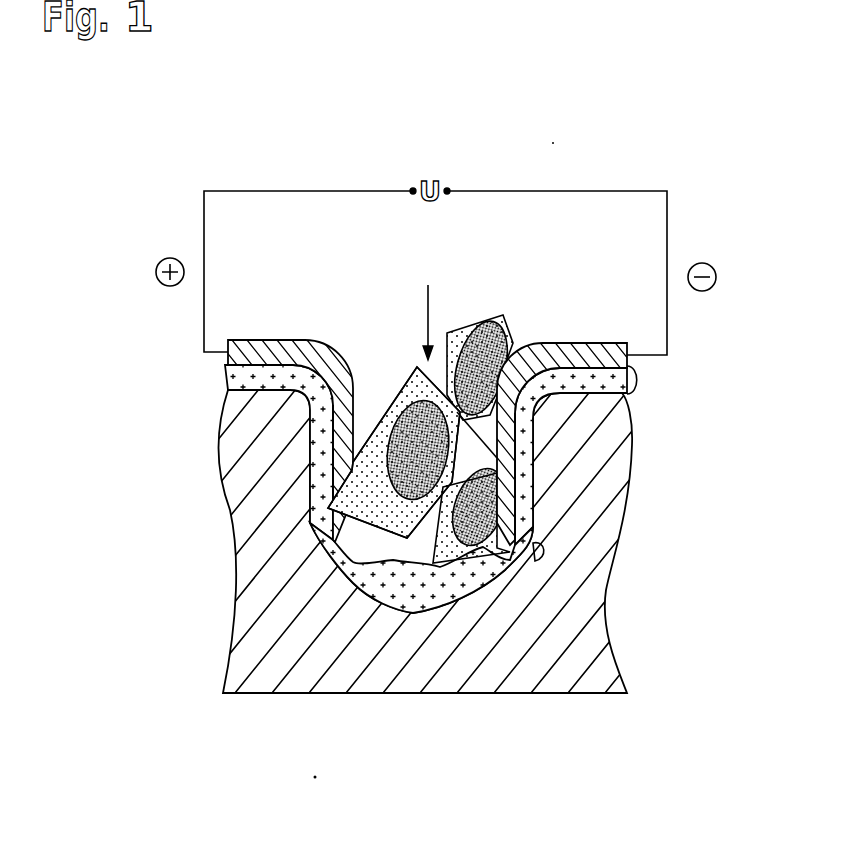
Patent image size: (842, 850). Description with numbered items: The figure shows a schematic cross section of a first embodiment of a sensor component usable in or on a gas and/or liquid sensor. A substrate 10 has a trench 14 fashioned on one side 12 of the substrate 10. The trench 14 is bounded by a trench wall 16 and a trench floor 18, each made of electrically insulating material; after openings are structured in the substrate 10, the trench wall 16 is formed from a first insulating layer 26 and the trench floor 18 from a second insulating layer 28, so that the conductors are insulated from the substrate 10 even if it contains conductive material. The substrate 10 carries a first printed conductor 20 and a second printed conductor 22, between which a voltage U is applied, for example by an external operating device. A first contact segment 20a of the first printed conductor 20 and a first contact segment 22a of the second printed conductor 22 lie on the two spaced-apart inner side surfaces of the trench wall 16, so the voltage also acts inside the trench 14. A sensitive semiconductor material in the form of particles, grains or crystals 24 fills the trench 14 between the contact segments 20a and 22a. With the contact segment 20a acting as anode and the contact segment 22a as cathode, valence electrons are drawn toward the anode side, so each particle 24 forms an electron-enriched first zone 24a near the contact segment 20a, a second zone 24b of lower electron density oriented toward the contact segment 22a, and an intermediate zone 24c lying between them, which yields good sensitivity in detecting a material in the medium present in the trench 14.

The substrate 10 is at (523, 645).
The side of the substrate 12 is at (627, 398).
The trench 14 is at (427, 328).
The trench wall 16 is at (318, 417).
The trench floor 18 is at (413, 600).
The first printed conductor 20 is at (272, 340).
The first contact segment of the first printed conductor 20a is at (350, 470).
The second printed conductor 22 is at (587, 343).
The first contact segment of the second printed conductor 22a is at (512, 525).
The particle, grain, and/or crystal 24 is at (378, 372).
The first zone 24a is at (462, 345).
The second zone 24b is at (523, 345).
The intermediate zone 24c is at (524, 335).
The first insulating layer 26 is at (636, 378).
The second insulating layer 28 is at (545, 553).